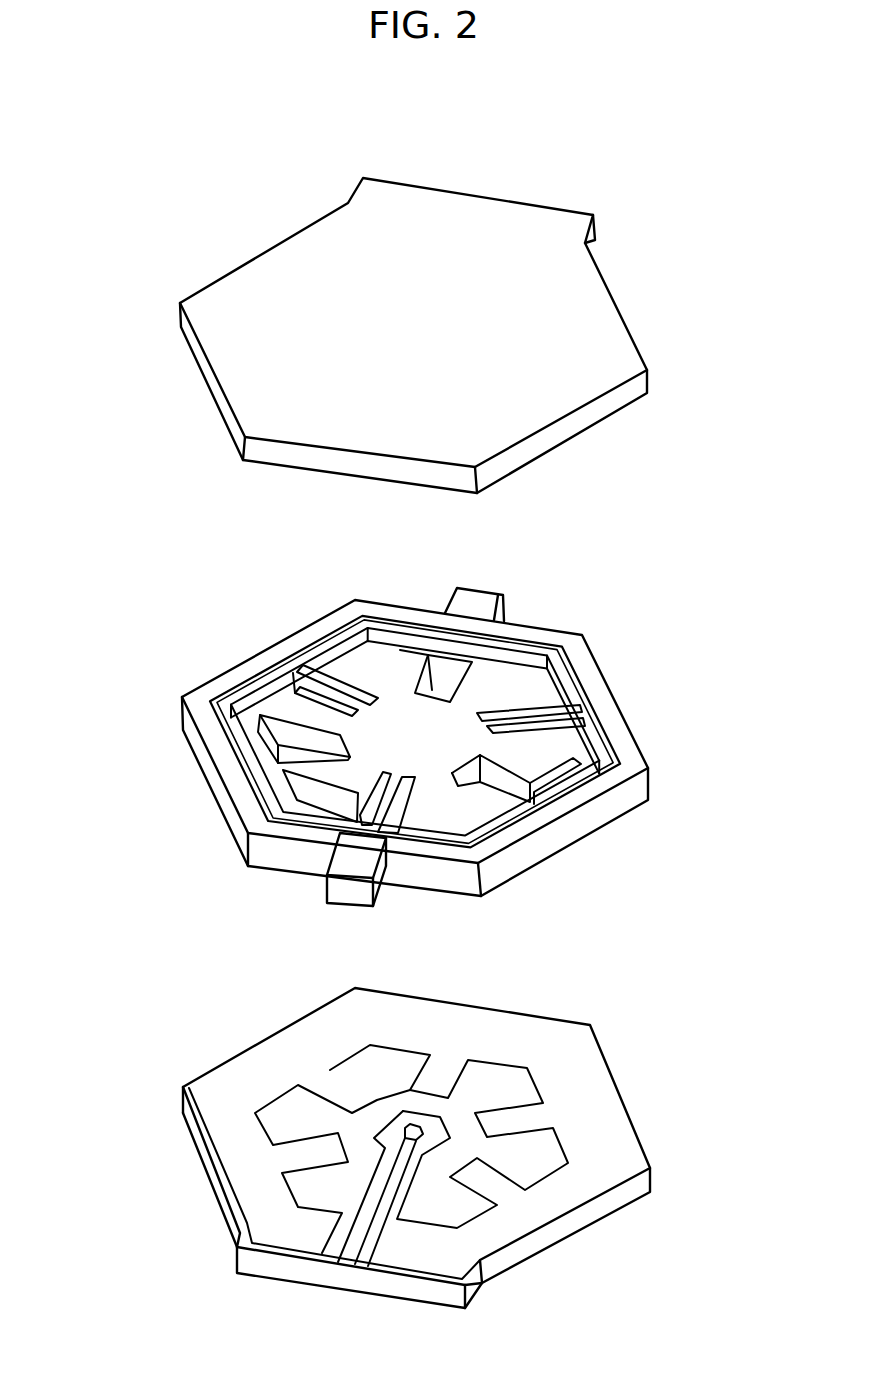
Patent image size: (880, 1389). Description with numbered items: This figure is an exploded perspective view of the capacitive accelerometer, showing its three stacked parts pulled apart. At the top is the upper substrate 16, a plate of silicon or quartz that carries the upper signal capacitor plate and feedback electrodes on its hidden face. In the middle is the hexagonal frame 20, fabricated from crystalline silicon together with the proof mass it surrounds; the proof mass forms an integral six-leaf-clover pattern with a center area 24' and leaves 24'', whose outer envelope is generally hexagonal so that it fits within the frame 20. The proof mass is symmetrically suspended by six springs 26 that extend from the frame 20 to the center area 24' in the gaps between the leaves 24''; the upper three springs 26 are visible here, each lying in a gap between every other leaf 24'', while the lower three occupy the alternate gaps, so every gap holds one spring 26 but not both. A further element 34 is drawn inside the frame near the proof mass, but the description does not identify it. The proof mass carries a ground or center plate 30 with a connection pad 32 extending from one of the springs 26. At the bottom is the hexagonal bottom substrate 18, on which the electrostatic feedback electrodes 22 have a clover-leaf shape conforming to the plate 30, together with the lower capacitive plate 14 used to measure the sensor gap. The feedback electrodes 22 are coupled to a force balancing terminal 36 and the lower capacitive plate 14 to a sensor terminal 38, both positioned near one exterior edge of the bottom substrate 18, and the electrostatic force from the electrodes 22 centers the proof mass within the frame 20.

The lower capacitive plate 14 is at (432, 1127).
The upper substrate 16 is at (632, 316).
The bottom substrate 18 is at (655, 1180).
The frame 20 is at (613, 810).
The electrostatic feedback electrodes 22 is at (538, 1102).
The center area 24' is at (349, 732).
The leaves 24'' is at (415, 660).
The springs 26 is at (313, 650).
The ground plate 30 is at (343, 838).
The connection pad 32 is at (357, 900).
The block 34 is at (510, 685).
The force balancing terminal 36 is at (267, 1235).
The sensor terminal 38 is at (217, 1187).